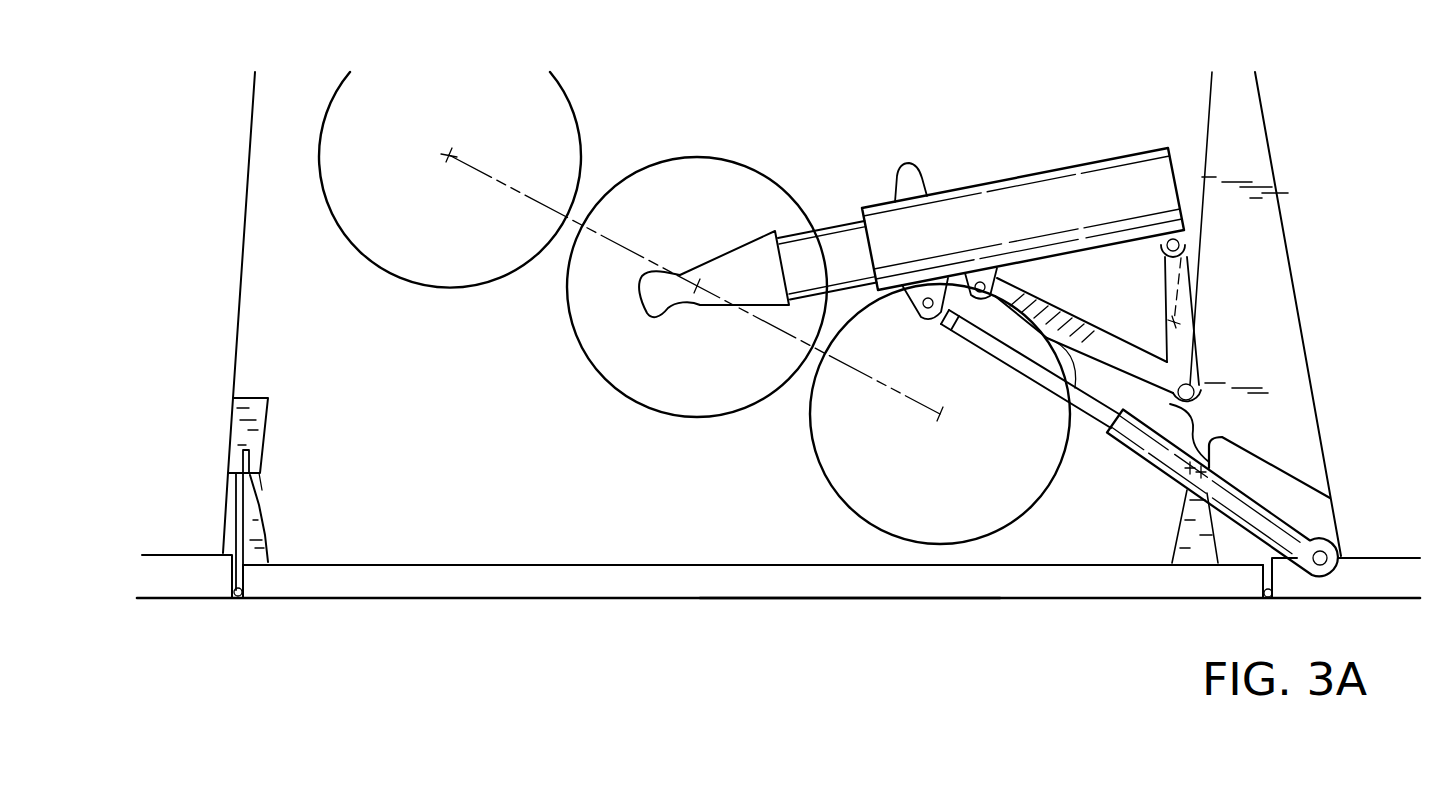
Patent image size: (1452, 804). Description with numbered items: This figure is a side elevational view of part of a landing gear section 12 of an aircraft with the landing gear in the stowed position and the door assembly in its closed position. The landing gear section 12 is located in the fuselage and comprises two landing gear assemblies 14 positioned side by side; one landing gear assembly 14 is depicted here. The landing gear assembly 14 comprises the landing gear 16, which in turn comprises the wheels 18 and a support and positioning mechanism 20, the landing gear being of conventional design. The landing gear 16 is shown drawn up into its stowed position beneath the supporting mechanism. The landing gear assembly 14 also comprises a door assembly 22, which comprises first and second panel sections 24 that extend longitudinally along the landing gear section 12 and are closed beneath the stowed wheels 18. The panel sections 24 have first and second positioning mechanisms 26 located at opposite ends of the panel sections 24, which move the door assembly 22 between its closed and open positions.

The landing gear section 12 is at (997, 608).
The landing gear assembly 14 is at (900, 605).
The landing gear 16 is at (803, 482).
The wheels 18 is at (590, 333).
The support and positioning mechanism 20 is at (1042, 197).
The door assembly 22 is at (595, 585).
The panel section 24 is at (763, 585).
The positioning mechanism 26 is at (265, 512).